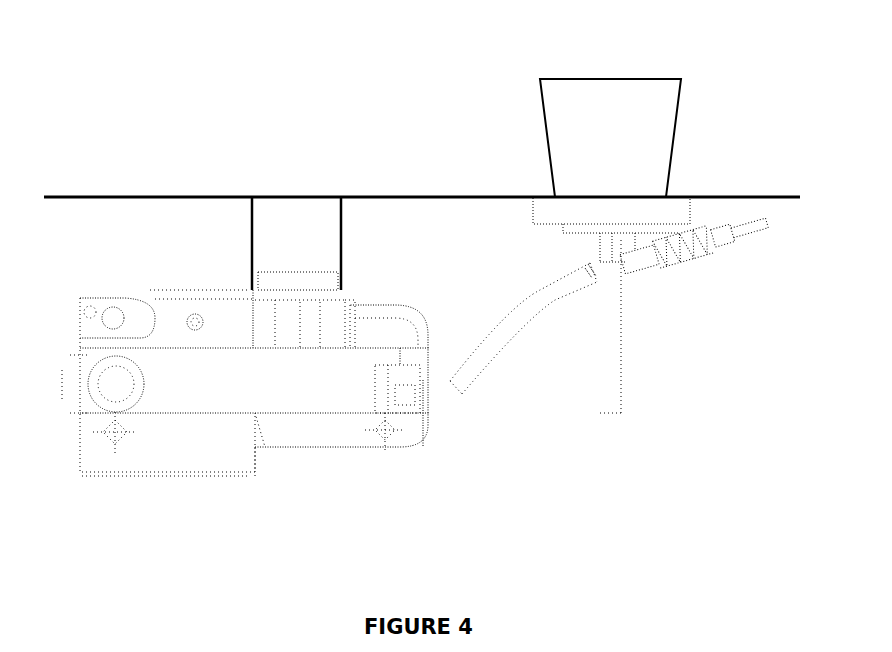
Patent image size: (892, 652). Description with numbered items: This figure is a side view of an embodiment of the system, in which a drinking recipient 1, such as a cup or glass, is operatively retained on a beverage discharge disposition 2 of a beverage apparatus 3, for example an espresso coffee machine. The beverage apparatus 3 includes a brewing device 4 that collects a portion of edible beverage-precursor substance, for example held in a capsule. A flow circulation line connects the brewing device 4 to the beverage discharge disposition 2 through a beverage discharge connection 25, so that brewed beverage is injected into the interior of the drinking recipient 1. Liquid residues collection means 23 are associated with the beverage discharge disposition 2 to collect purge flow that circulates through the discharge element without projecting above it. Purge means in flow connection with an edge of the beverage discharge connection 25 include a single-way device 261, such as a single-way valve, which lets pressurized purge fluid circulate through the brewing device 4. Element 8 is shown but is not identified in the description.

The drinking recipient 1 is at (610, 138).
The beverage discharge disposition 2 is at (601, 217).
The beverage apparatus 3 is at (422, 175).
The brewing device 4 is at (246, 374).
The vertical support posts 8 is at (296, 243).
The liquid residues collection means 23 is at (630, 326).
The beverage discharge connection 25 is at (523, 328).
The single-way device 261 is at (695, 255).